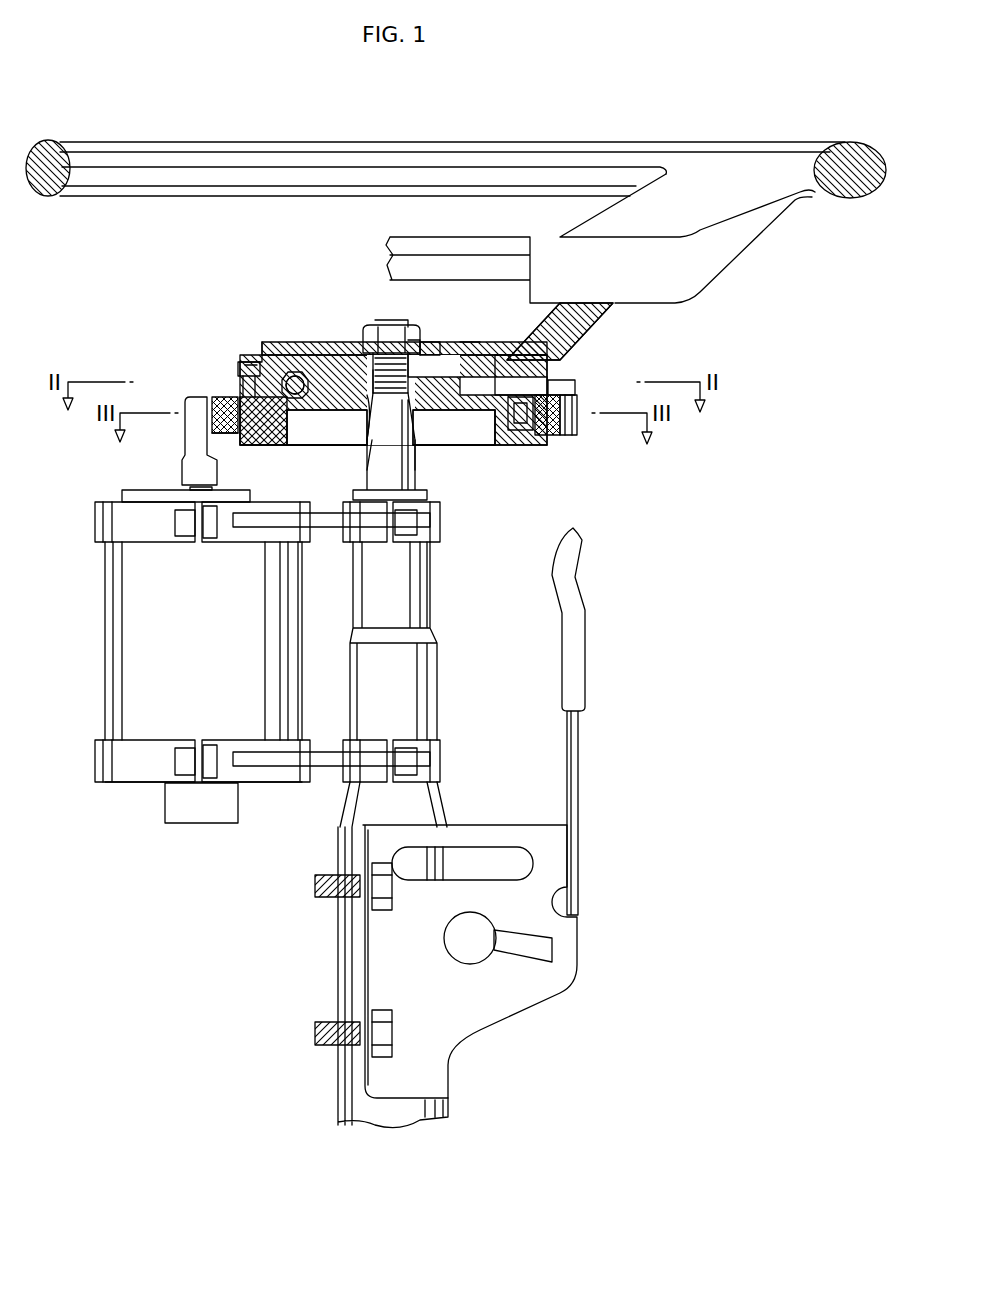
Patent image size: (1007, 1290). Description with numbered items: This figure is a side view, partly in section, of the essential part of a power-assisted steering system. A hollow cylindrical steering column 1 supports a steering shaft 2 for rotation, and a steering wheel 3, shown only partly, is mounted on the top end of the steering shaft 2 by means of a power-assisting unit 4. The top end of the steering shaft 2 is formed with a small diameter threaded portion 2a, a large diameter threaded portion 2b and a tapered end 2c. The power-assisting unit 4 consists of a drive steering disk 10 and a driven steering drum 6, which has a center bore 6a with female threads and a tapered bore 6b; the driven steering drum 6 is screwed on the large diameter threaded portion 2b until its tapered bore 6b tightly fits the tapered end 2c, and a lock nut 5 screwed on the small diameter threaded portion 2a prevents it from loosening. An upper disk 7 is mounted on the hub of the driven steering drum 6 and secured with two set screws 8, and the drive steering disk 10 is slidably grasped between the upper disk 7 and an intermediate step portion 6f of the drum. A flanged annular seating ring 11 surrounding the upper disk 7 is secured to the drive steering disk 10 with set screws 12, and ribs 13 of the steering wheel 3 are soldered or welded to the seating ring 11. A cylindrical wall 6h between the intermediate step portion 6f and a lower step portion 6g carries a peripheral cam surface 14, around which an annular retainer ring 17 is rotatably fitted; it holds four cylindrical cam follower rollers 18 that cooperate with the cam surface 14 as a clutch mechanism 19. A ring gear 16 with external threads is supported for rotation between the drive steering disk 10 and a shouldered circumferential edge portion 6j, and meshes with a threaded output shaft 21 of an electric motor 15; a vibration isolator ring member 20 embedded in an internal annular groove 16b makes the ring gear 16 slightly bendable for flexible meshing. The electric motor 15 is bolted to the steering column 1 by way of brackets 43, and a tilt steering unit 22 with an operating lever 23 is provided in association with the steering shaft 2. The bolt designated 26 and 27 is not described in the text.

The steering column 1 is at (437, 600).
The steering shaft 2 is at (428, 482).
The small diameter threaded portion 2a is at (385, 322).
The large diameter threaded portion 2b is at (360, 378).
The tapered end 2c is at (416, 442).
The steering wheel 3 is at (546, 152).
The power-assisting unit 4 is at (443, 278).
The lock nut 5 is at (413, 340).
The driven steering drum 6 is at (332, 400).
The center bore 6a is at (422, 398).
The tapered bore 6b is at (363, 345).
The intermediate step portion 6f is at (492, 362).
The lower step portion 6g is at (522, 447).
The cylindrical wall 6h is at (275, 427).
The shouldered circumferential edge portion 6j is at (548, 447).
The upper disk 7 is at (315, 345).
The set screws 8 is at (432, 344).
The drive steering disk 10 is at (470, 342).
The flanged annular seating ring 11 is at (268, 342).
The set screws 12 is at (243, 362).
The ribs 13 is at (602, 312).
The peripheral cam surface 14 is at (512, 432).
The electric motor 15 is at (212, 641).
The ring gear 16 is at (216, 398).
The internal annular groove 16b is at (232, 446).
The annular retainer ring 17 is at (282, 442).
The cylindrical cam follower rollers 18 is at (560, 393).
The clutch mechanism 19 is at (560, 331).
The vibration isolator ring member 20 is at (246, 380).
The threaded output shaft 21 is at (183, 432).
The tilt steering unit 22 is at (657, 622).
The operating lever 23 is at (582, 716).
The bolt 26 is at (287, 372).
The bolt 27 is at (295, 385).
The brackets 43 is at (325, 528).